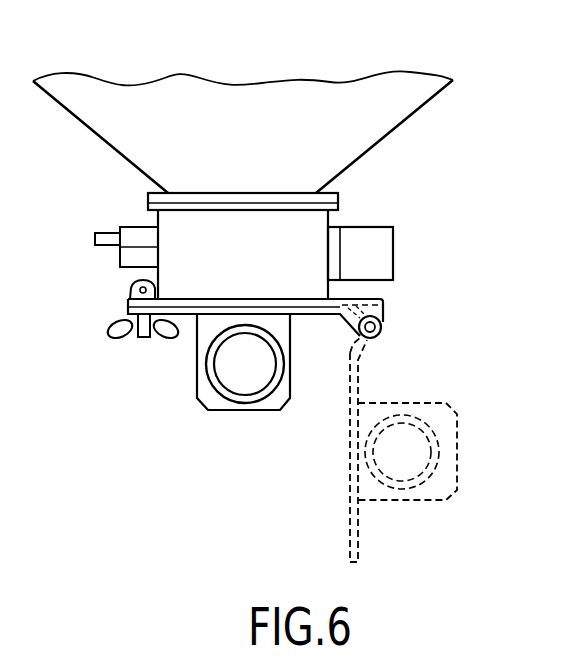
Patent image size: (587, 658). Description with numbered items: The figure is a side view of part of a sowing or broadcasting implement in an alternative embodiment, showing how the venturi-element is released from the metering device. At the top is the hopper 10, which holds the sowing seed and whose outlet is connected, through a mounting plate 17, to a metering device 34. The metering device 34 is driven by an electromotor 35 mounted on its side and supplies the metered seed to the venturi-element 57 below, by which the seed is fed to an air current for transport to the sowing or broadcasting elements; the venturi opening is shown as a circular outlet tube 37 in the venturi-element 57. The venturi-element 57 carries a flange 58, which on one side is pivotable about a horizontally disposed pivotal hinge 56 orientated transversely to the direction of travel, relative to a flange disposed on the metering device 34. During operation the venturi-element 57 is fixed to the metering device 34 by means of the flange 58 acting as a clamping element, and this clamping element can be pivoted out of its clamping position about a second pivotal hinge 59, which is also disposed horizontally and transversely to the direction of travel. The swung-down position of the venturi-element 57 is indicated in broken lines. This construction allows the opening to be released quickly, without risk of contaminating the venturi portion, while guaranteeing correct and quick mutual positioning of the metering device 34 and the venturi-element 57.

The hopper 10 is at (307, 80).
The mounting flange plate 17 is at (240, 193).
The metering device 34 is at (288, 227).
The electromotor 35 is at (388, 245).
The outlet tube 37 is at (237, 395).
The pivotal hinge 56 is at (381, 327).
The venturi-element 57 is at (197, 370).
The flange 58 is at (112, 331).
The pivotal hinge 59 is at (147, 290).